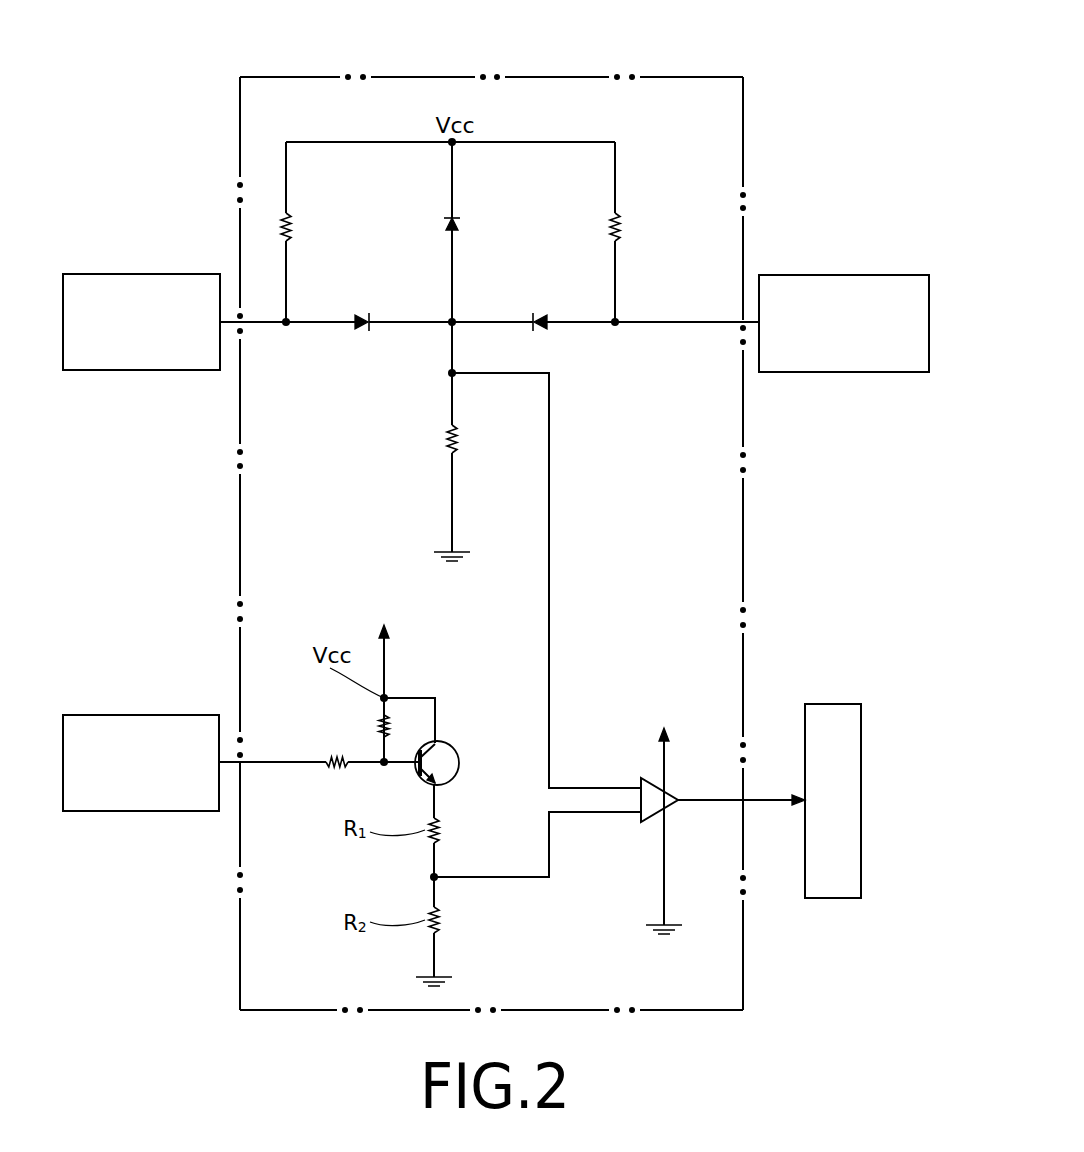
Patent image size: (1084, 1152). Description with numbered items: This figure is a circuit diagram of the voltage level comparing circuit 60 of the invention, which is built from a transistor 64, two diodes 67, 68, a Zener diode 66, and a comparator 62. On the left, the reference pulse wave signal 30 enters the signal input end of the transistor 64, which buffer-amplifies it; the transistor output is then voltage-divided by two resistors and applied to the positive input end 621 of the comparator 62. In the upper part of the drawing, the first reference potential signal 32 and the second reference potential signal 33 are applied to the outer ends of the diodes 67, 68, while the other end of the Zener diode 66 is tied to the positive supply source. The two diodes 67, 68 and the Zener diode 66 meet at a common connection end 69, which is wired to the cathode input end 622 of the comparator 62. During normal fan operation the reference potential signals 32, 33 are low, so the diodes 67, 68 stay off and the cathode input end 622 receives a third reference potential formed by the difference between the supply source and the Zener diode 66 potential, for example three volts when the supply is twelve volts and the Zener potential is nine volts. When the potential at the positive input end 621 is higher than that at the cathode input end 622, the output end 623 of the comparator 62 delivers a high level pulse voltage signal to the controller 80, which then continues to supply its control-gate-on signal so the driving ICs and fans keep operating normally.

The voltage level comparing circuit 60 is at (560, 77).
The reference pulse wave signal 30 is at (147, 730).
The first reference potential signal 32 is at (153, 295).
The second reference potential signal 33 is at (826, 295).
The comparator 62 is at (665, 805).
The positive input end 621 is at (640, 815).
The cathode input end 622 is at (637, 782).
The output end 623 is at (668, 798).
The transistor 64 is at (437, 765).
The Zener diode 66 is at (430, 216).
The diode 67 is at (367, 330).
The diode 68 is at (535, 330).
The common connection end 69 is at (460, 320).
The controller 80 is at (835, 877).